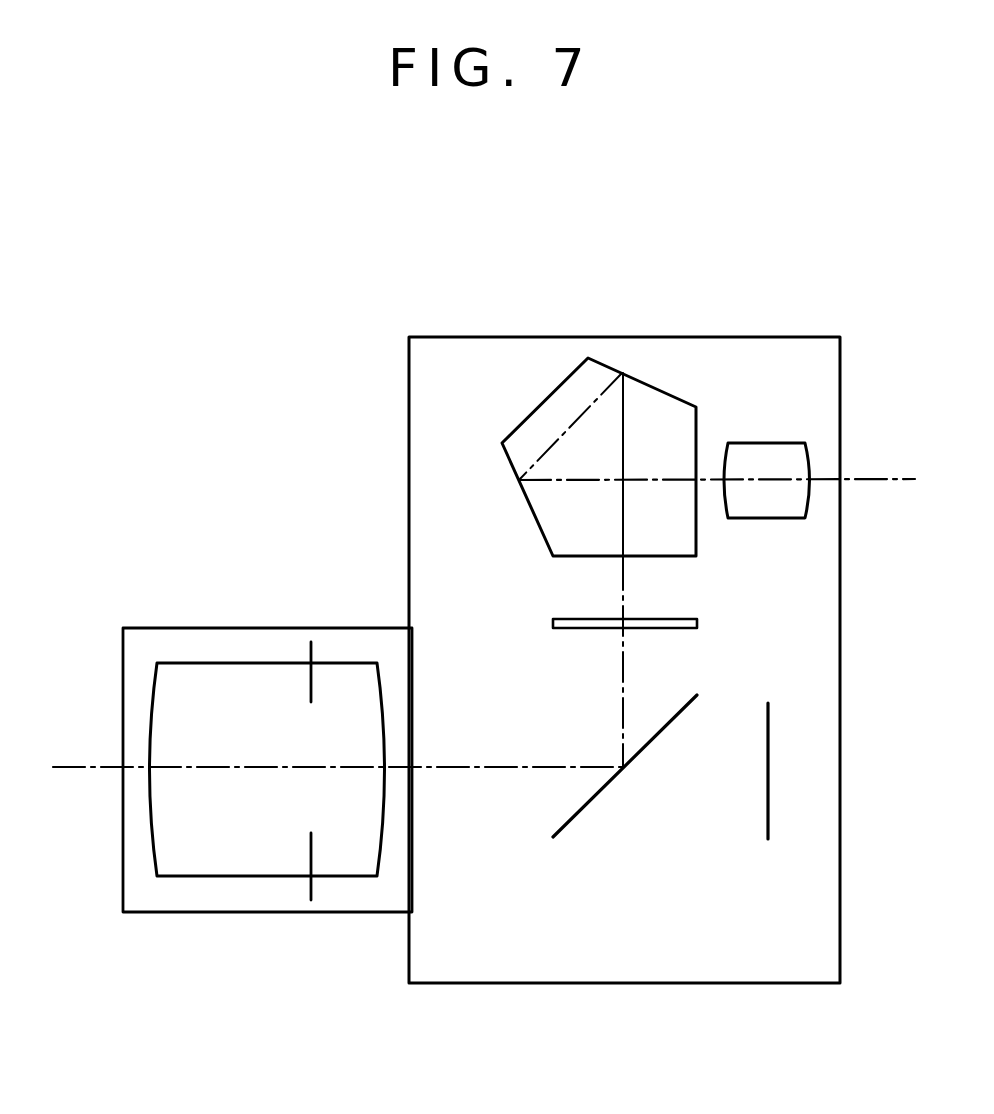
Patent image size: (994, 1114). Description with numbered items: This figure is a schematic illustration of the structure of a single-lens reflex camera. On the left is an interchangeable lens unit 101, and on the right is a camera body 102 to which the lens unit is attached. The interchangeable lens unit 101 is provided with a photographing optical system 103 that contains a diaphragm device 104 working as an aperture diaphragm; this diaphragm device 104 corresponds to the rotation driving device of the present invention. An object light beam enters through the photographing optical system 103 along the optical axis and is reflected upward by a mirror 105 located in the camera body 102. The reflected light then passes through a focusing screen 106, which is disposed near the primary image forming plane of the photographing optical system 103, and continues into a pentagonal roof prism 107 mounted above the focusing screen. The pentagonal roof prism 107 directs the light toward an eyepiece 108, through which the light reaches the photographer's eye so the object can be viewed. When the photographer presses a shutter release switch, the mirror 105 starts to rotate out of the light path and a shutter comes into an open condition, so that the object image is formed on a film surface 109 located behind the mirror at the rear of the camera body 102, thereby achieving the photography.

The interchangeable lens unit 101 is at (194, 628).
The camera body 102 is at (750, 337).
The photographing optical system 103 is at (187, 877).
The diaphragm device 104 is at (311, 880).
The mirror 105 is at (577, 815).
The focusing screen 106 is at (671, 619).
The pentagonal roof prism 107 is at (605, 364).
The eyepiece 108 is at (788, 441).
The film surface 109 is at (771, 742).